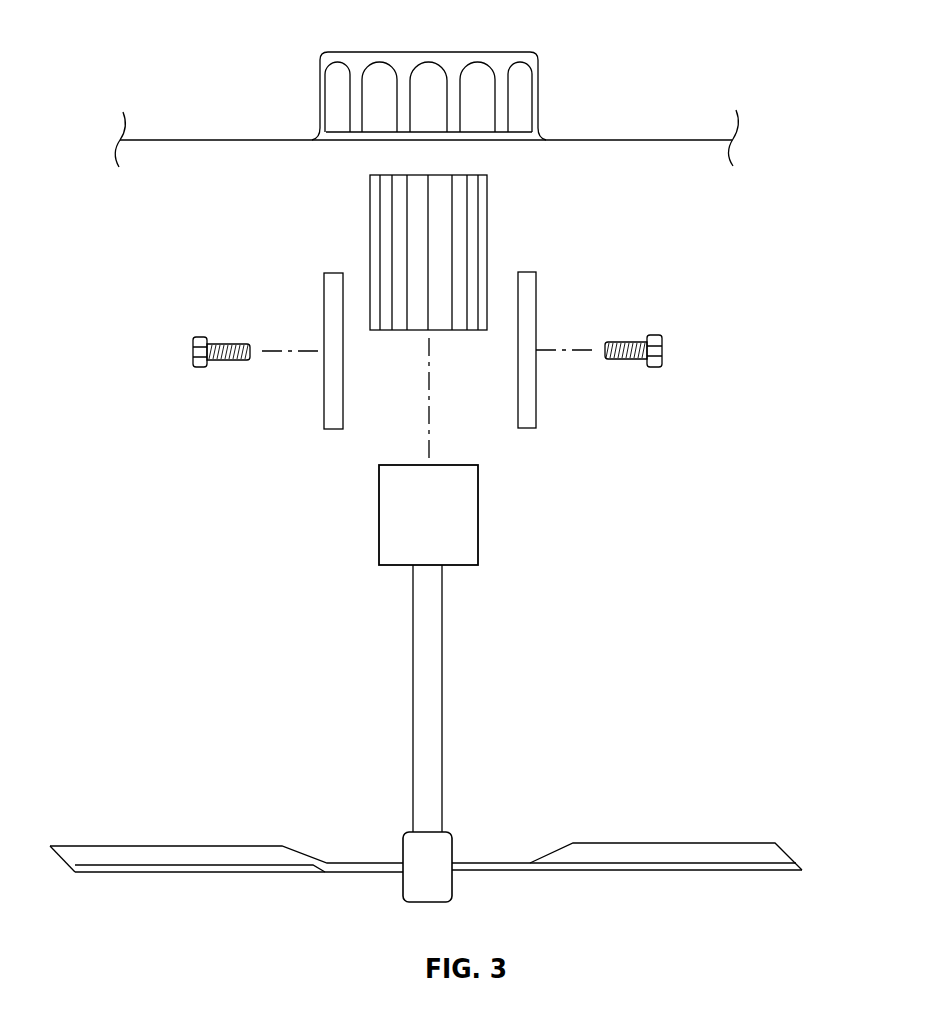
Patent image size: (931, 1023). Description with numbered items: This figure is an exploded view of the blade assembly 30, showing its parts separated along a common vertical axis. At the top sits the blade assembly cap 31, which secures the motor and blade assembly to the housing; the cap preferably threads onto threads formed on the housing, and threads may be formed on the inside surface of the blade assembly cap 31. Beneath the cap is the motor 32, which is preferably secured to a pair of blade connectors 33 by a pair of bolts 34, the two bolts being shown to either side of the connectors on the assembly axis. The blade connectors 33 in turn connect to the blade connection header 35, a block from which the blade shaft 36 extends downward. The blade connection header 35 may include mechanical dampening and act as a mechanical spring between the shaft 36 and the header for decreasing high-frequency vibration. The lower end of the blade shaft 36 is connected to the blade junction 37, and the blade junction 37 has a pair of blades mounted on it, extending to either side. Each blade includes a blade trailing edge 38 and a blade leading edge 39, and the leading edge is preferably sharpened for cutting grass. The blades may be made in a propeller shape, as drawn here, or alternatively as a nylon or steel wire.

The blade assembly 30 is at (683, 70).
The blade assembly cap 31 is at (538, 88).
The motor 32 is at (487, 250).
The blade connector 33 is at (528, 293).
The bolt 34 is at (662, 350).
The blade connection header 35 is at (467, 517).
The blade shaft 36 is at (430, 681).
The blade junction 37 is at (440, 851).
The blade trailing edge 38 is at (666, 845).
The blade leading edge 39 is at (727, 873).